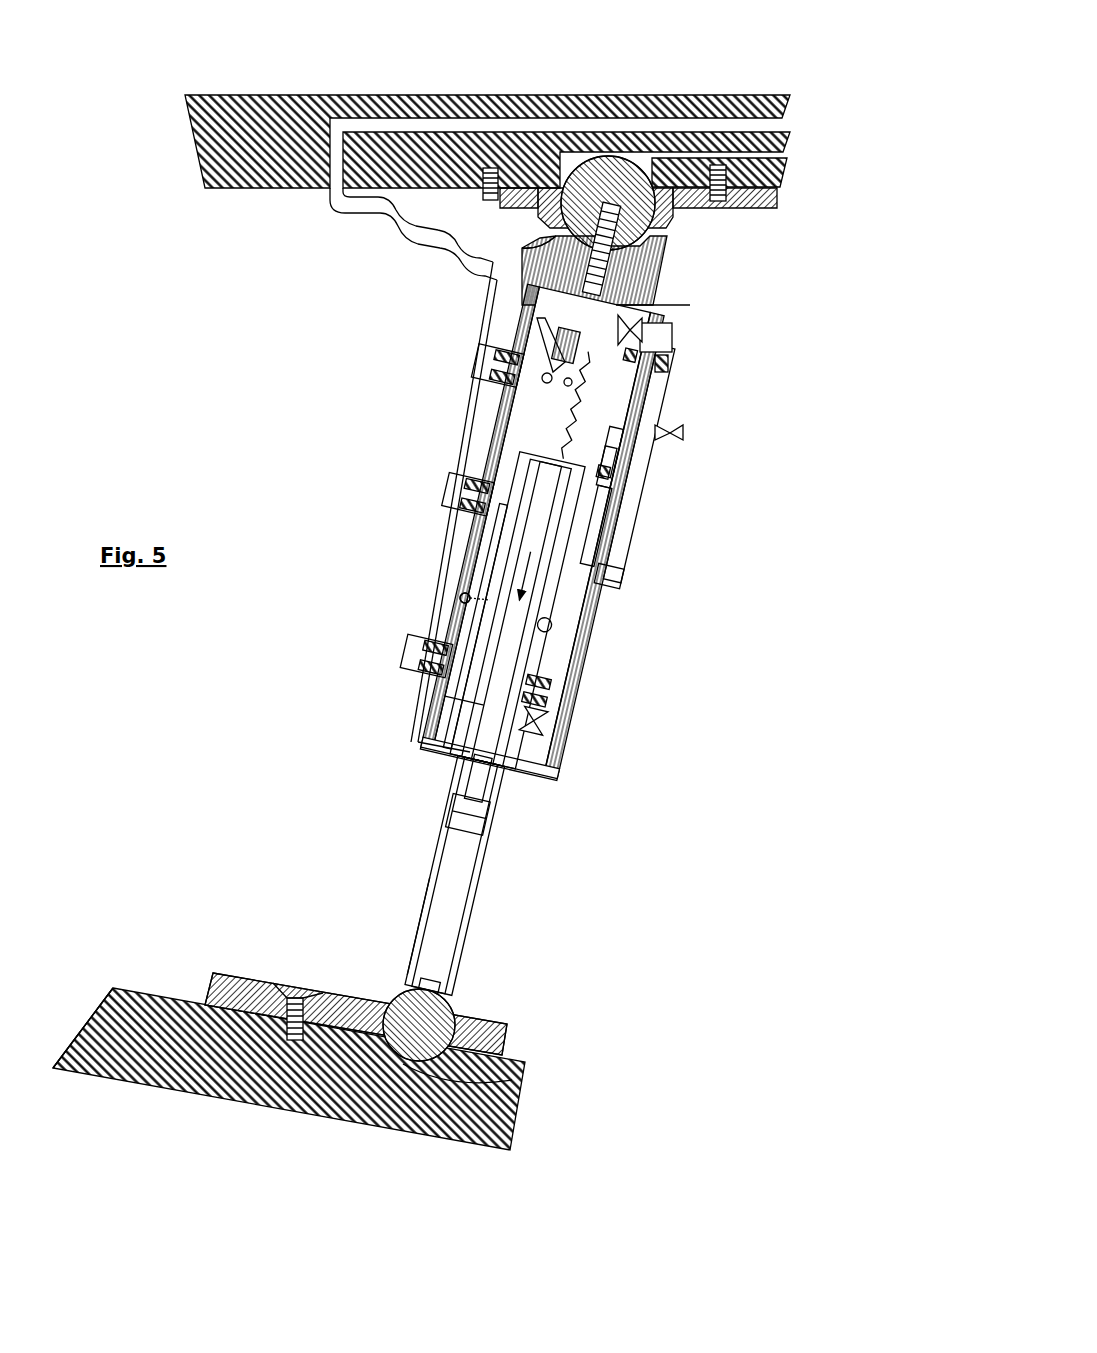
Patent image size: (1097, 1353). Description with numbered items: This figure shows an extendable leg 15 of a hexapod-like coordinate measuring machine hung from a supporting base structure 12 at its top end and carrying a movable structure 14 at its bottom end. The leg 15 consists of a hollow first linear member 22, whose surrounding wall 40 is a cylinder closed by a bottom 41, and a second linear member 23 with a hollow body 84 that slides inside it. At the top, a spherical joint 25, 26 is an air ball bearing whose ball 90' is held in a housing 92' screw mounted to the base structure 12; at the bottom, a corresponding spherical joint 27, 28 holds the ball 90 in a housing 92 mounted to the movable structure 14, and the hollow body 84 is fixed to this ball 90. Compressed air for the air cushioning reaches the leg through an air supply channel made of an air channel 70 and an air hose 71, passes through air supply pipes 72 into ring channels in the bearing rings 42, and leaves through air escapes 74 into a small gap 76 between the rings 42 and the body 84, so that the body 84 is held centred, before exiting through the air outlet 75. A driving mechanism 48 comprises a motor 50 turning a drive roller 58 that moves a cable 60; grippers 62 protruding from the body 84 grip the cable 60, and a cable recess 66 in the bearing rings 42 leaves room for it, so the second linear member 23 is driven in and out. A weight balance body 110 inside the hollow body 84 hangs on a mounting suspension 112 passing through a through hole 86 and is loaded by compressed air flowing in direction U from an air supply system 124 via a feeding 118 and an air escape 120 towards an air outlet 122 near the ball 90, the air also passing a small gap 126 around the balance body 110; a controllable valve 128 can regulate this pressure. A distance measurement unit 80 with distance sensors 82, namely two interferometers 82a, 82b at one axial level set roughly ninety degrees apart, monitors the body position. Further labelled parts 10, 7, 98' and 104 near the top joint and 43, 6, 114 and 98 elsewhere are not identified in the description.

The ball joint 10 is at (572, 160).
The mounting plate 7 is at (668, 130).
The bearing plate 98' is at (665, 109).
The supporting base structure 12 is at (237, 125).
The air channel 70 is at (337, 160).
The air hose 71 is at (418, 224).
The top air ball bearing 25 is at (490, 239).
The top spherical joint 26 is at (490, 239).
The housing 92' is at (664, 194).
The ball of the top ball bearing 90' is at (693, 220).
The threaded stud 104 is at (647, 236).
The bottom 41 is at (643, 270).
The drive roller 58 is at (652, 306).
The driving mechanism 48 is at (690, 342).
The driving motor 50 is at (668, 340).
The feeding 118 is at (650, 343).
The drive belt or cable 60 is at (665, 372).
The air escapes 74 is at (537, 320).
The air supply pipes 72 is at (585, 380).
The clamp bracket 43 is at (527, 393).
The bearing rings 42 is at (510, 417).
The through hole 86 is at (577, 467).
The controllable valve 128 is at (663, 453).
The second air supply system 124 is at (672, 433).
The air escape 120 is at (660, 470).
The cable recess 66 is at (628, 508).
The first linear member 22 is at (622, 535).
The gap 76 is at (408, 626).
The interferometer 82 is at (460, 598).
The interferometer 82a is at (460, 598).
The interferometer 82b is at (555, 622).
The distance measurement unit 80 is at (455, 608).
The gripper 62 is at (612, 577).
The arrow U is at (535, 588).
The surrounding wall 40 is at (432, 697).
The air outlet 75 is at (418, 712).
The cylinder housing 6 is at (547, 720).
The extendable leg 15 is at (370, 768).
The mounting suspension 112 is at (473, 783).
The small gap 126 is at (520, 789).
The weight balance body 110 is at (467, 815).
The second linear member 23 is at (416, 890).
The bottom air ball bearing 27 is at (338, 943).
The bottom spherical joint 28 is at (338, 943).
The hollow body 84 is at (480, 887).
The air outlet 122 is at (458, 990).
The lower ball joint 114 is at (427, 1015).
The bearing seat 98 is at (525, 1064).
The housing 92 is at (220, 1080).
The movable structure 14 is at (270, 1082).
The ball of the bottom ball bearing 90 is at (356, 1075).